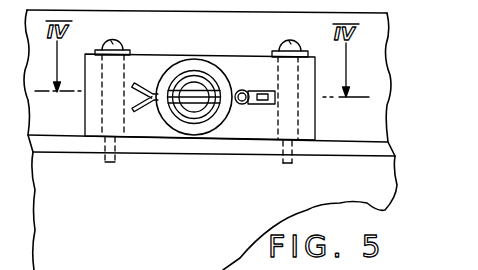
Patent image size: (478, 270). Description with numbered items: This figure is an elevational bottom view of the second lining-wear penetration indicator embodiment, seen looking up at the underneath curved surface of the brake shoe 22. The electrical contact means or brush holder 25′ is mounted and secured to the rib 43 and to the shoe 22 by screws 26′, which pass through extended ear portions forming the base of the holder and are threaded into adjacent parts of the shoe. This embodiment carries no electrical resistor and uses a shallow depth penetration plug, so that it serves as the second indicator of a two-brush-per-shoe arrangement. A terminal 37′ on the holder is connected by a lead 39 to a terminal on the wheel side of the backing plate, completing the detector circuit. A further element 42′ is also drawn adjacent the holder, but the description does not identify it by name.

The brake shoe 22 is at (112, 209).
The brush holder 25′ is at (253, 42).
The screws 26′ is at (119, 43).
The terminal 37′ is at (257, 104).
The lead 39 is at (268, 105).
The clip 42′ is at (150, 105).
The rib 43 is at (345, 153).